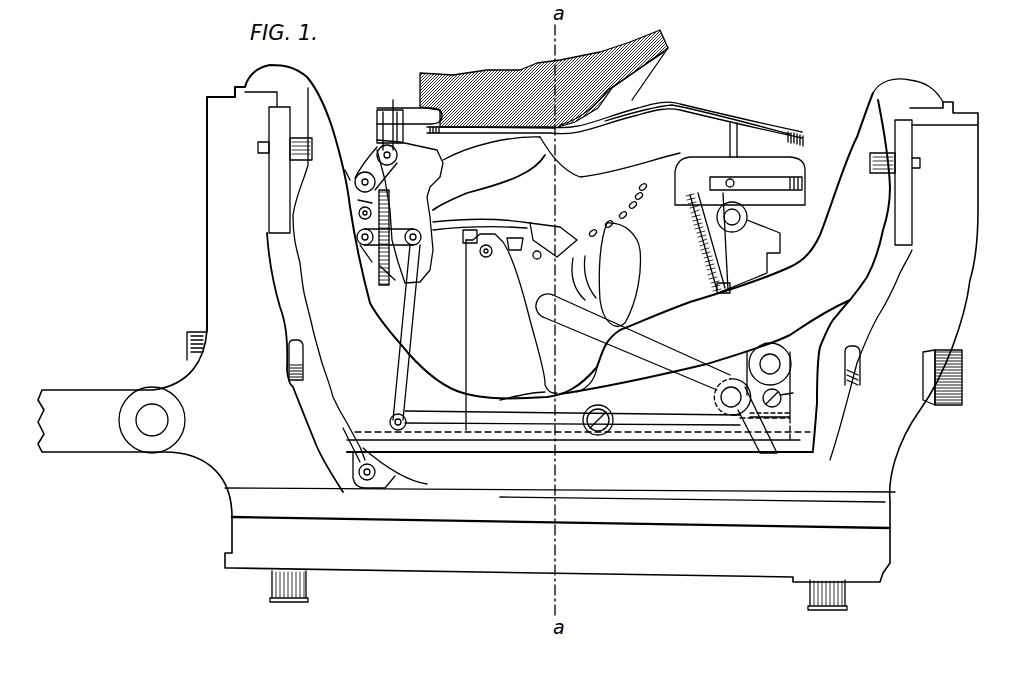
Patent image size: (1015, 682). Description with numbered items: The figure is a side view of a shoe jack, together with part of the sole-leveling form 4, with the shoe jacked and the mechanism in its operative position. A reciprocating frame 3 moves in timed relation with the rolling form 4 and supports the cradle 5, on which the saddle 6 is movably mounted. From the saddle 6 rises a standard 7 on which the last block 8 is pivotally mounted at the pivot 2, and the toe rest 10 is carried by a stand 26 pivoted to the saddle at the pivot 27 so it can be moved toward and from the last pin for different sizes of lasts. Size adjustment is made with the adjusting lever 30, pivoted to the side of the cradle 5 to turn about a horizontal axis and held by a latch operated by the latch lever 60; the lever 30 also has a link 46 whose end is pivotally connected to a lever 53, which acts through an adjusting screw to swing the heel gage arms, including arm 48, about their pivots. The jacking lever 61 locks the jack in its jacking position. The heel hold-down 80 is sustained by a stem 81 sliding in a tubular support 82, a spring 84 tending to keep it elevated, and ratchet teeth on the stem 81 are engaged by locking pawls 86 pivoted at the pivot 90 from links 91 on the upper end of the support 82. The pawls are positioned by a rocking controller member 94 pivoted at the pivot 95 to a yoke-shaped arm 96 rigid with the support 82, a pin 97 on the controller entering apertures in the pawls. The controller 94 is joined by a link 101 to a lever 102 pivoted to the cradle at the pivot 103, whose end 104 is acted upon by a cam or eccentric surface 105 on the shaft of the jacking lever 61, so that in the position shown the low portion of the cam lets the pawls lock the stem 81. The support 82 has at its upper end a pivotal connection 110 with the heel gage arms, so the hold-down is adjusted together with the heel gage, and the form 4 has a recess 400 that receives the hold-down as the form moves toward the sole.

The pivot 2 is at (482, 255).
The reciprocating frame 3 is at (235, 452).
The sole-leveling form 4 is at (488, 83).
The cradle 5 is at (300, 263).
The saddle 6 is at (533, 387).
The standard 7 is at (513, 297).
The last block 8 is at (515, 247).
The toe rest 10 is at (797, 167).
The stand 26 is at (780, 247).
The pivot 27 is at (770, 358).
The adjusting lever 30 is at (630, 273).
The link 46 is at (393, 480).
The arm 48 is at (467, 210).
The lever 53 is at (352, 452).
The latch lever 60 is at (580, 272).
The jacking lever 61 is at (652, 373).
The hold-down 80 is at (405, 107).
The stem 81 is at (383, 133).
The tubular support 82 is at (355, 189).
The spring 84 is at (380, 267).
The locking pawls 86 is at (358, 204).
The pivot 90 is at (363, 172).
The arms or links 91 is at (348, 176).
The rocking controller member 94 is at (393, 240).
The pivot 95 is at (365, 252).
The yoke-shaped arm 96 is at (358, 238).
The pin 97 is at (360, 217).
The link 101 is at (406, 350).
The lever 102 is at (497, 420).
The pivot 103 is at (600, 437).
The end of lever 104 is at (737, 415).
The cam or eccentric surface 105 is at (793, 385).
The pivotal connection 110 is at (393, 100).
The recess 400 is at (440, 110).